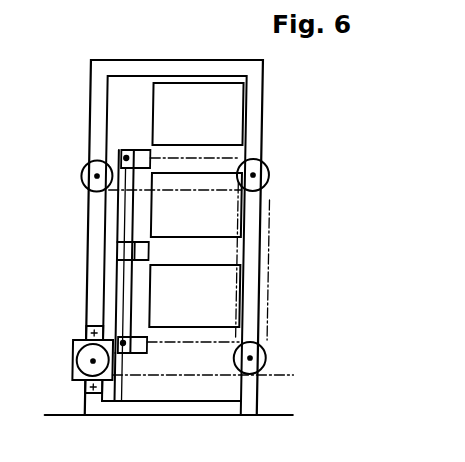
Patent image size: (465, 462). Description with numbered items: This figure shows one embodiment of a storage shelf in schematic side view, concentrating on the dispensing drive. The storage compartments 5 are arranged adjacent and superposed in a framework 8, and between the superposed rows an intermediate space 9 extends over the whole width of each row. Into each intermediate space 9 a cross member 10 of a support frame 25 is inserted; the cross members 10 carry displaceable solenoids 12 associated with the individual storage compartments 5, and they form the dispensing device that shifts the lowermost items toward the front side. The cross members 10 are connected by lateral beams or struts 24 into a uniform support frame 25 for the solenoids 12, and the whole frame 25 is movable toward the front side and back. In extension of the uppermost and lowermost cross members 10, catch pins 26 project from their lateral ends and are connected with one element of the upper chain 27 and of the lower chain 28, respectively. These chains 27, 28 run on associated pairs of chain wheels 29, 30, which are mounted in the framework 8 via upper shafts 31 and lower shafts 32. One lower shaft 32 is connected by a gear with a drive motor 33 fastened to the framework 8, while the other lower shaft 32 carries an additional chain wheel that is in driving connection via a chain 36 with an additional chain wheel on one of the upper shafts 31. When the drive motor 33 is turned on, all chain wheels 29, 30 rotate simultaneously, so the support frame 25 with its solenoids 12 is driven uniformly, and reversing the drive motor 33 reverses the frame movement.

The storage compartments 5 is at (232, 105).
The framework 8 is at (258, 68).
The intermediate space 9 is at (201, 152).
The cross members 10 is at (130, 150).
The solenoids 12 is at (139, 150).
The lateral beams or struts 24 is at (125, 218).
The support frame 25 is at (114, 202).
The catch pins 26 is at (117, 150).
The upper chain 27 is at (228, 158).
The lower chain 28 is at (217, 342).
The chain wheels 29 is at (82, 178).
The chain wheels 30 is at (85, 336).
The upper shafts 31 is at (97, 175).
The lower shafts 32 is at (93, 361).
The drive motor 33 is at (76, 361).
The chain 36 is at (268, 223).